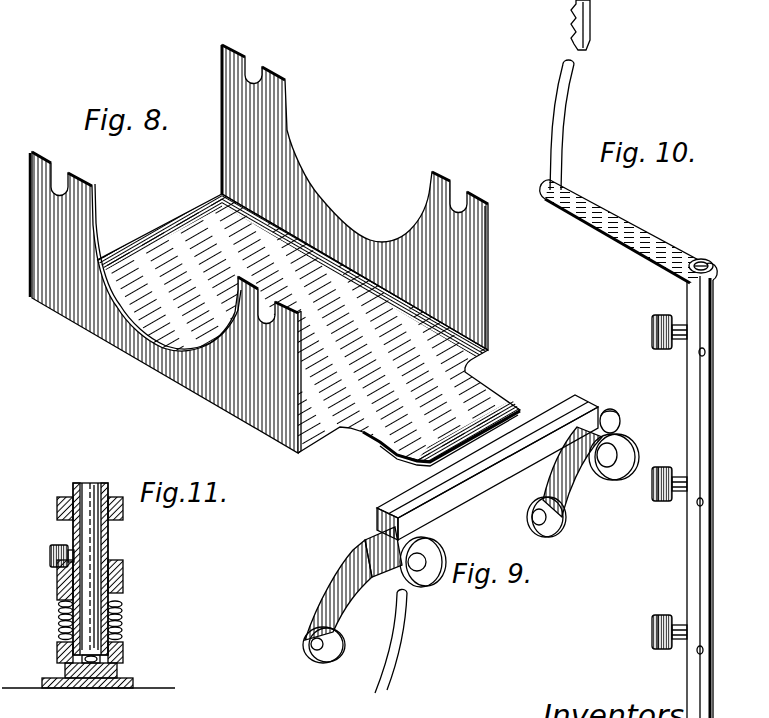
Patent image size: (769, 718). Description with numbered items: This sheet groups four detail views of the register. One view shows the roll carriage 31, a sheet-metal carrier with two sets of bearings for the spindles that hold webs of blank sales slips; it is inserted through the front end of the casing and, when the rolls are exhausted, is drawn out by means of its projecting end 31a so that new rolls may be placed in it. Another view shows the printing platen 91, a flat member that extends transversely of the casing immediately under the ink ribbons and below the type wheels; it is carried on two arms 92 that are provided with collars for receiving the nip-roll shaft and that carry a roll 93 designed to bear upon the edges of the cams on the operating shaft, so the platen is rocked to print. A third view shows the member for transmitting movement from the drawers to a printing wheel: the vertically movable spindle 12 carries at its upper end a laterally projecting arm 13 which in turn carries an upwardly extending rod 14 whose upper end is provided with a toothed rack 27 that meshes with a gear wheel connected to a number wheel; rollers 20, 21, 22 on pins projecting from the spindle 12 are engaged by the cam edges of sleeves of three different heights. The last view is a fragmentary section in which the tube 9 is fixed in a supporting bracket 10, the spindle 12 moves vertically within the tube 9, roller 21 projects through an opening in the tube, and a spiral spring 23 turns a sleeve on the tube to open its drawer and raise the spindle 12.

In FIG. 11, the tube 9 is at (109, 486).
In FIG. 11, the supporting bracket 10 is at (124, 652).
In FIG. 10, the spindle 12 is at (686, 392).
In FIG. 11, the spindle 12 is at (89, 532).
In FIG. 10, the laterally projecting arm 13 is at (641, 229).
In FIG. 9, the upwardly extending rod 14 is at (405, 648).
In FIG. 10, the upwardly extending rod 14 is at (577, 92).
In FIG. 10, the roller 20 is at (651, 336).
In FIG. 10, the roller 21 is at (661, 492).
In FIG. 11, the roller 21 is at (50, 557).
In FIG. 10, the roller 22 is at (661, 641).
In FIG. 11, the spiral spring 23 is at (121, 621).
In FIG. 10, the toothed rack 27 is at (571, 14).
In FIG. 8, the roll carriage 31 is at (275, 253).
In FIG. 8, the projecting end 31a is at (490, 405).
In FIG. 9, the platen 91 is at (409, 495).
In FIG. 9, the arm 92 is at (571, 488).
In FIG. 9, the roll 93 is at (555, 536).